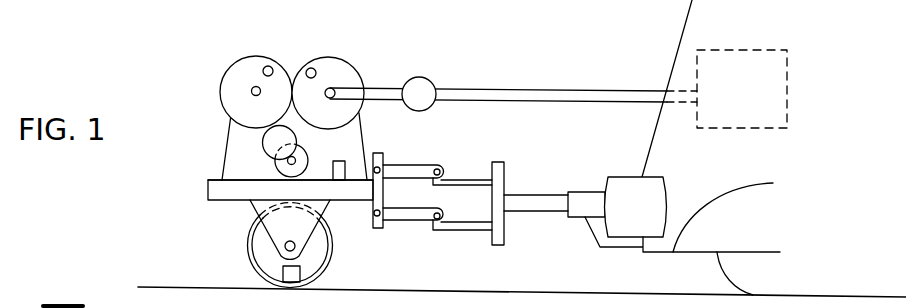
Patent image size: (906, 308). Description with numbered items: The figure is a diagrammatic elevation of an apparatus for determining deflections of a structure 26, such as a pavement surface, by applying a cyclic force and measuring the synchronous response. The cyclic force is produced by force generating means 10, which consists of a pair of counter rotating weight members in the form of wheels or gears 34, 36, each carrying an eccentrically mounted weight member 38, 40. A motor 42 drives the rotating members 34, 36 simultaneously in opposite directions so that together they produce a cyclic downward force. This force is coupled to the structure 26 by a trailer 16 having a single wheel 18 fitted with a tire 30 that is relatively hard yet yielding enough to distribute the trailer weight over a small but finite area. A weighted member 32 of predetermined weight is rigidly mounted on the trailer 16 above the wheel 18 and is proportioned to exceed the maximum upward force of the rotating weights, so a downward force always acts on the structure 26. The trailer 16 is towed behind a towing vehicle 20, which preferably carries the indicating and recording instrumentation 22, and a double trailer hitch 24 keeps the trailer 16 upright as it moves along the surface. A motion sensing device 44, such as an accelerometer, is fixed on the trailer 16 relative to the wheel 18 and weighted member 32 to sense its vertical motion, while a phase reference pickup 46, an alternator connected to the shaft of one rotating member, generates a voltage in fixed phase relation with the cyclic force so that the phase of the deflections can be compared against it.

The force generating means 10 is at (224, 147).
The trailer 16 is at (206, 192).
The wheel 18 is at (246, 251).
The towing vehicle 20 is at (666, 75).
The indicating and recording instrumentation 22 is at (755, 50).
The double trailer hitch 24 is at (450, 168).
The structure 26 is at (460, 291).
The tire 30 is at (333, 265).
The weighted member 32 is at (211, 179).
The counter rotating weight member 34 is at (227, 69).
The counter rotating weight member 36 is at (364, 72).
The eccentrically mounted weight member 38 is at (277, 44).
The eccentrically mounted weight member 40 is at (314, 67).
The motor 42 is at (308, 152).
The motion sensing device 44 is at (350, 164).
The phase reference pickup 46 is at (419, 77).